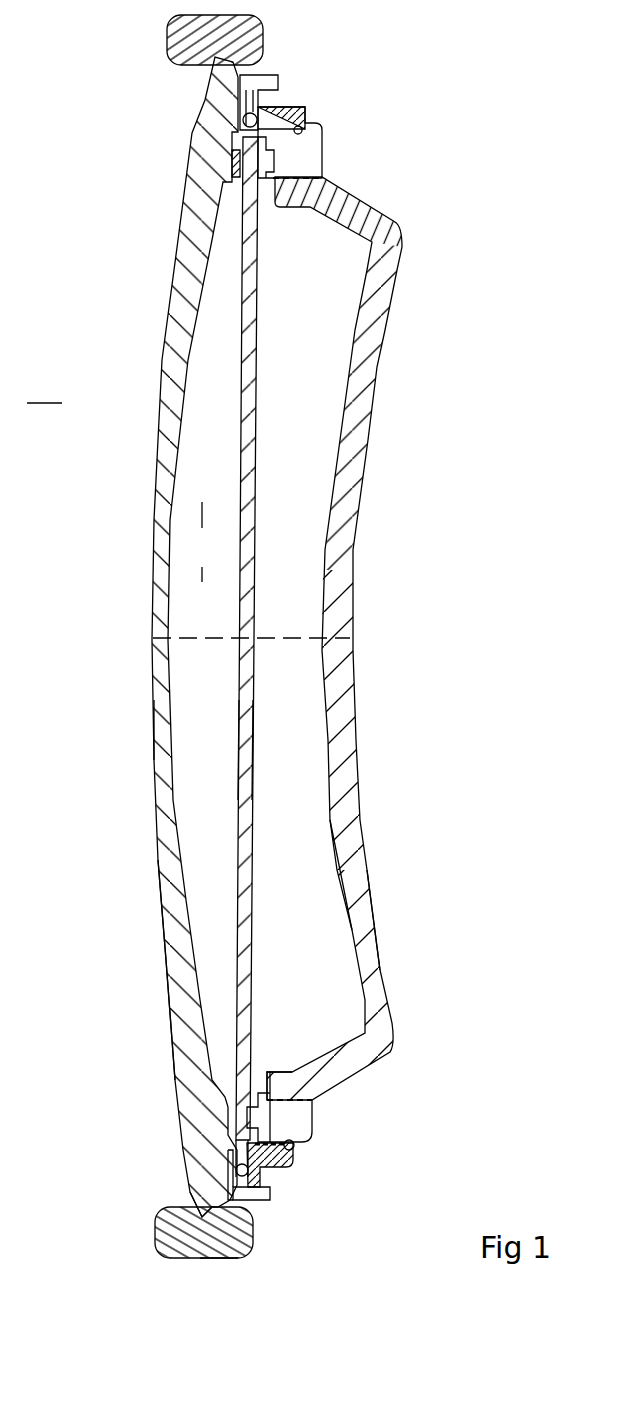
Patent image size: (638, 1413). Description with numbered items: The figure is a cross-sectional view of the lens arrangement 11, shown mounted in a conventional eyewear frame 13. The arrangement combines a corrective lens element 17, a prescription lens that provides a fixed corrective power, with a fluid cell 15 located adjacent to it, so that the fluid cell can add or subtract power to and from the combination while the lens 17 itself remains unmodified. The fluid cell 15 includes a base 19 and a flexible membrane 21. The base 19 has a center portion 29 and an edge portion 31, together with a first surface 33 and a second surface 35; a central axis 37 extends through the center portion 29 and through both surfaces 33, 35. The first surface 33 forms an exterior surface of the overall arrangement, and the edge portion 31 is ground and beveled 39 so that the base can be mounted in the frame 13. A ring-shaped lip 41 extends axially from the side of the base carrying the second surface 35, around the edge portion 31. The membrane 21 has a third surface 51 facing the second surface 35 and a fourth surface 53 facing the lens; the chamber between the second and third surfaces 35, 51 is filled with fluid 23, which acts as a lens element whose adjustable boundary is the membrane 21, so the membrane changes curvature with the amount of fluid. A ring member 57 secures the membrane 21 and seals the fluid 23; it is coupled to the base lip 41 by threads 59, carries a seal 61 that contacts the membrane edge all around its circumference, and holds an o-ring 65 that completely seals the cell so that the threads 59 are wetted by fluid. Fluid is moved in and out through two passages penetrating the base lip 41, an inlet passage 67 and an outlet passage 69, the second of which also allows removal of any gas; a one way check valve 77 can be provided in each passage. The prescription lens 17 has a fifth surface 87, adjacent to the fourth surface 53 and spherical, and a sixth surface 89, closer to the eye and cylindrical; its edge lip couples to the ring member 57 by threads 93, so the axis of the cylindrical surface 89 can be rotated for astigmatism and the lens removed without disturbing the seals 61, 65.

The lens arrangement 11 is at (135, 393).
The frame 13 is at (182, 43).
The fluid cell 15 is at (205, 733).
The corrective lens element 17 is at (372, 975).
The base 19 is at (160, 895).
The membrane 21 is at (247, 440).
The fluid 23 is at (206, 542).
The center portion 29 is at (165, 730).
The edge portion 31 is at (203, 1198).
The first surface 33 is at (160, 955).
The second surface 35 is at (163, 758).
The central axis 37 is at (213, 638).
The bevel 39 is at (235, 1248).
The lip 41 is at (293, 112).
The third surface 51 is at (235, 770).
The fourth surface 53 is at (252, 760).
The ring member 57 is at (295, 1125).
The threads 59 is at (273, 1077).
The seal 61 is at (227, 1122).
The o-ring 65 is at (297, 1152).
The inlet passage 67 is at (275, 1200).
The outlet passage 69 is at (276, 76).
The one way check valve 77 is at (255, 1172).
The fifth surface 87 is at (342, 915).
The sixth surface 89 is at (375, 893).
The threads 93 is at (300, 1073).